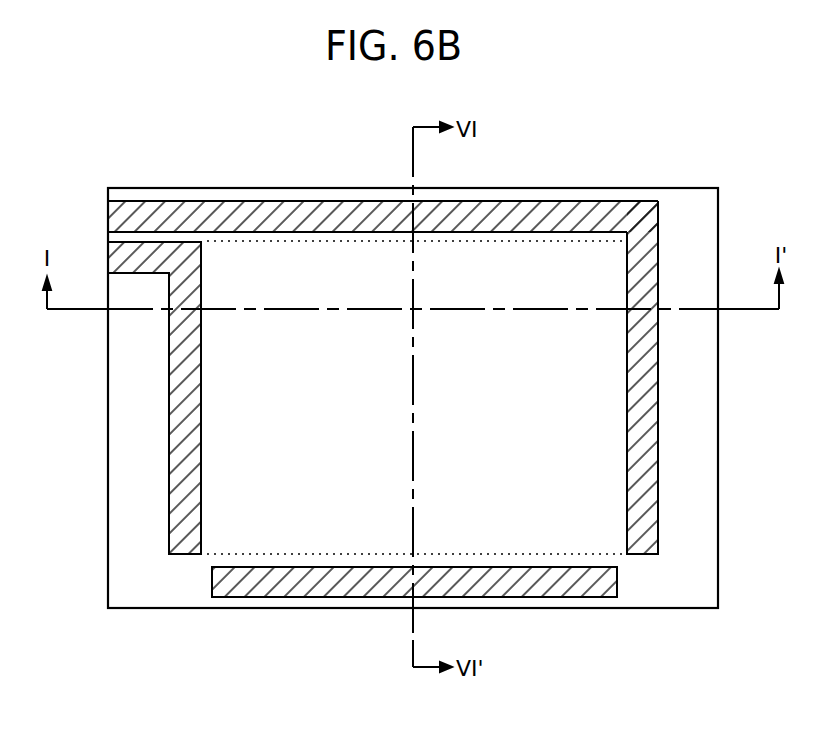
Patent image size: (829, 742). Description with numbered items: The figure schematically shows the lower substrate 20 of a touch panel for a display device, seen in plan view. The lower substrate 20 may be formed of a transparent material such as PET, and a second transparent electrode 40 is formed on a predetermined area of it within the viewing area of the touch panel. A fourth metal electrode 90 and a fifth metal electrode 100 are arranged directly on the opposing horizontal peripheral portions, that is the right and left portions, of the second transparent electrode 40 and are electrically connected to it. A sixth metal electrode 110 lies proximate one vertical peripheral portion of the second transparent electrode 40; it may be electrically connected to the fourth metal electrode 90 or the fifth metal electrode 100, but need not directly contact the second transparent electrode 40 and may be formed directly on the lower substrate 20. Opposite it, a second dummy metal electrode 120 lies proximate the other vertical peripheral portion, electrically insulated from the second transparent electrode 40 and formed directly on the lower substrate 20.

The lower substrate 20 is at (705, 578).
The second transparent electrode 40 is at (585, 252).
The fourth metal electrode 90 is at (658, 385).
The fifth metal electrode 100 is at (175, 389).
The sixth metal electrode 110 is at (525, 207).
The second dummy metal electrode 120 is at (577, 585).